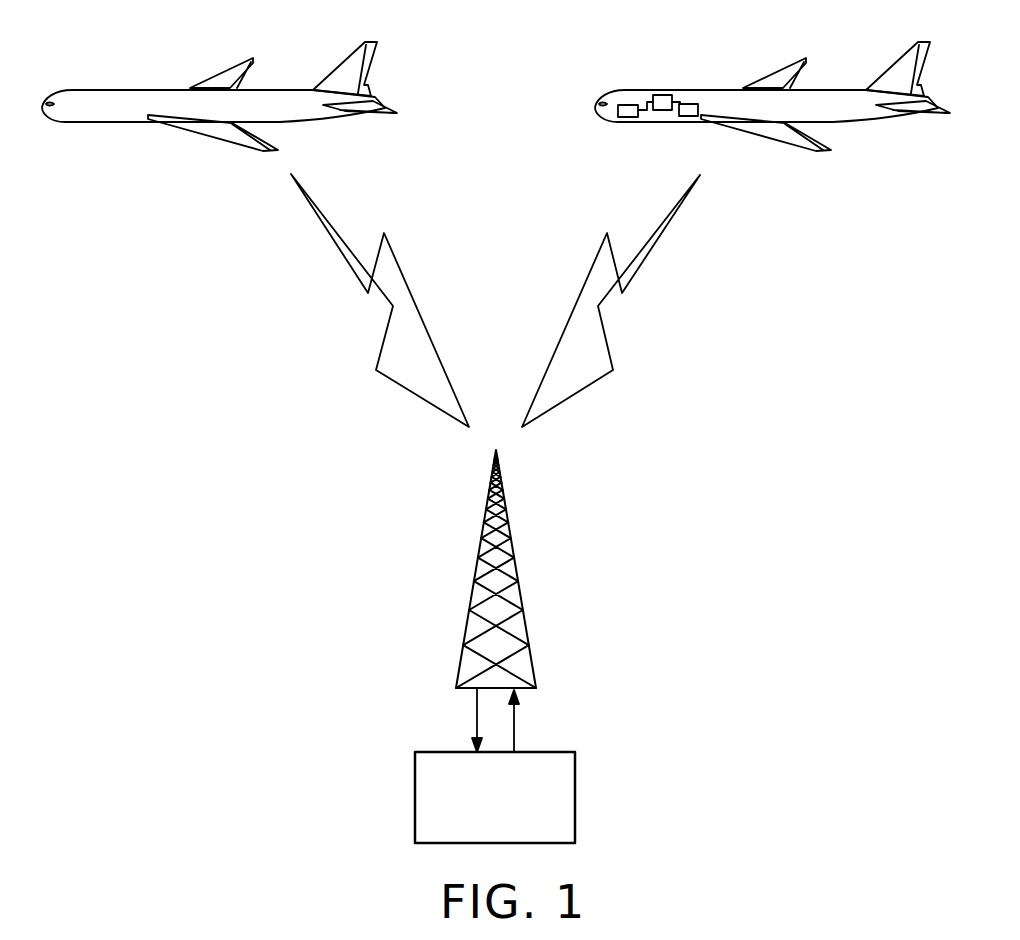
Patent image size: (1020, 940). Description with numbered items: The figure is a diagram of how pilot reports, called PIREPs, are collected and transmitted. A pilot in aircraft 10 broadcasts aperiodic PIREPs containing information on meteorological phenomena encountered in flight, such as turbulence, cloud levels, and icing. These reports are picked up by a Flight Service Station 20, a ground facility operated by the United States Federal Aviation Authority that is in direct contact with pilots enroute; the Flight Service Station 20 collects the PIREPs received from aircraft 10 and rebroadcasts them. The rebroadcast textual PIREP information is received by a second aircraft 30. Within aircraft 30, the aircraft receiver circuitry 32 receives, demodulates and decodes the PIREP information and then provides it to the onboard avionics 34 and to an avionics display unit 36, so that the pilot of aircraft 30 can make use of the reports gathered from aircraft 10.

The aircraft 10 is at (122, 88).
The aircraft 30 is at (865, 121).
The aircraft receiver circuitry 32 is at (627, 105).
The avionics 34 is at (663, 110).
The avionics display unit 36 is at (695, 104).
The Flight Service Station 20 is at (576, 798).